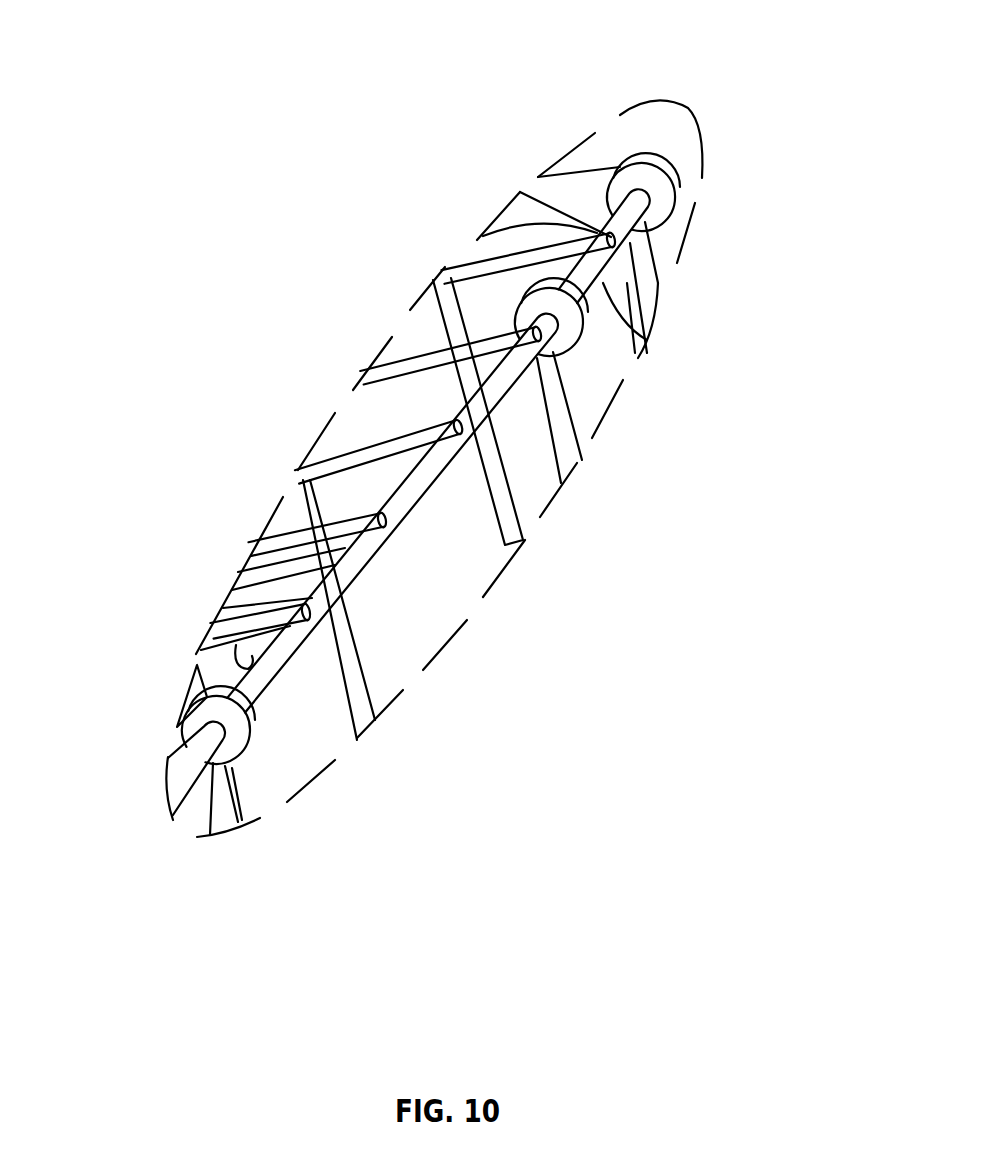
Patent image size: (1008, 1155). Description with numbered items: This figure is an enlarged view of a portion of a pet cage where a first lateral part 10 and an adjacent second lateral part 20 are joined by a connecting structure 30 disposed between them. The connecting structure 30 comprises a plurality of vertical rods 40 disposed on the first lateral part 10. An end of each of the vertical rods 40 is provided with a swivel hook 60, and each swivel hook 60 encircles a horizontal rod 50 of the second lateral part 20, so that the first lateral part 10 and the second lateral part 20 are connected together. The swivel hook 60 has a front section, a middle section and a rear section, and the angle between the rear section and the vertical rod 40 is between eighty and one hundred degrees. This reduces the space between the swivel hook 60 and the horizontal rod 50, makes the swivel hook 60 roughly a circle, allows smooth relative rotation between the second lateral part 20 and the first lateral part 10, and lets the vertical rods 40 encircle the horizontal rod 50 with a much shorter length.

The first lateral part 10 is at (542, 442).
The second lateral part 20 is at (520, 257).
The connecting structure 30 is at (682, 183).
The vertical rods 40 is at (650, 290).
The horizontal rod 50 is at (447, 348).
The swivel hook 60 is at (630, 184).